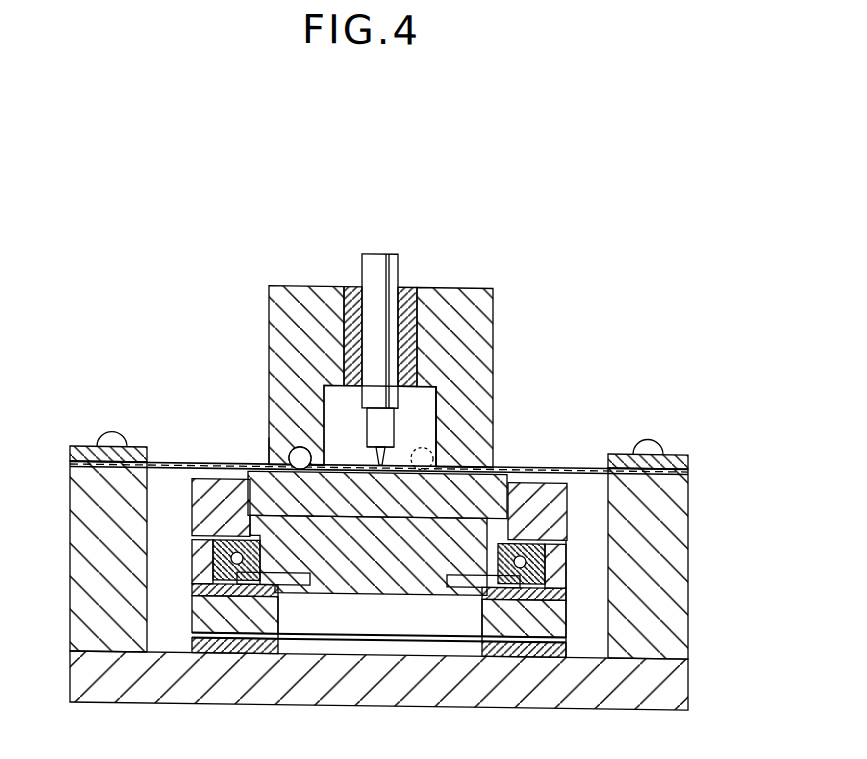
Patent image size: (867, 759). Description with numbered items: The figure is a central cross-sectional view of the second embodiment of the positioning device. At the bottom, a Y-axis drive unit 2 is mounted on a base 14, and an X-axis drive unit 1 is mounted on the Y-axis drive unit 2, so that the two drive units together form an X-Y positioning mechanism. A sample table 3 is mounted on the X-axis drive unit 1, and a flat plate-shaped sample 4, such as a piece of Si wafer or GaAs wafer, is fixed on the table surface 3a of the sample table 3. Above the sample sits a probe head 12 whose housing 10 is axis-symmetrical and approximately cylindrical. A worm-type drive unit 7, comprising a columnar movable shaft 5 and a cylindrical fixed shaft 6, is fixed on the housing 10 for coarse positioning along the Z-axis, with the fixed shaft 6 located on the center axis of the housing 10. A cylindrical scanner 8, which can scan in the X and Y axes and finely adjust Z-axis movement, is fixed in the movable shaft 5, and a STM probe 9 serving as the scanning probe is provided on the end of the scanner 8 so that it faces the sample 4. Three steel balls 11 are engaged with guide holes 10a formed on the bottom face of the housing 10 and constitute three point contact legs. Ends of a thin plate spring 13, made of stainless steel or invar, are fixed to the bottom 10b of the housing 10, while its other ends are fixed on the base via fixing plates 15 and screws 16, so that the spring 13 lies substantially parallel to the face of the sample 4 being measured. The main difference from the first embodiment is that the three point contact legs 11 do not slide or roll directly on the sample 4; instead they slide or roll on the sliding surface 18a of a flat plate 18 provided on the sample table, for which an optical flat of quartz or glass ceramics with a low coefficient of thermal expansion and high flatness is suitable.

The X-axis drive unit 1 is at (188, 483).
The Y-axis drive unit 2 is at (188, 590).
The sample table 3 is at (384, 574).
The table surface 3a is at (567, 477).
The sample 4 is at (358, 461).
The movable shaft 5 is at (380, 333).
The fixed shaft 6 is at (411, 286).
The worm-type drive unit 7 is at (388, 316).
The scanner 8 is at (400, 420).
The STM probe 9 is at (405, 451).
The housing 10 is at (297, 284).
The guide holes 10a is at (270, 459).
The bottom of housing 10b is at (289, 455).
The steel balls 11 is at (290, 449).
The probe head 12 is at (372, 318).
The thin plate spring 13 is at (165, 461).
The base 14 is at (55, 472).
The fixing plates 15 is at (688, 462).
The screws 16 is at (650, 440).
The flat plate 18 is at (409, 593).
The sliding surface 18a is at (505, 469).